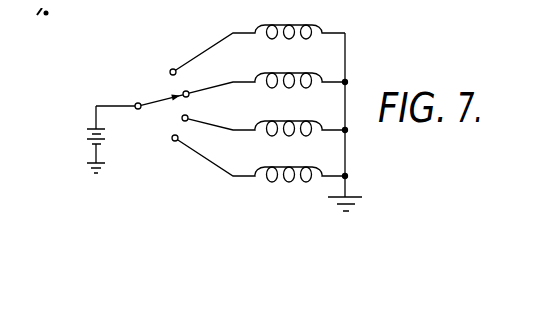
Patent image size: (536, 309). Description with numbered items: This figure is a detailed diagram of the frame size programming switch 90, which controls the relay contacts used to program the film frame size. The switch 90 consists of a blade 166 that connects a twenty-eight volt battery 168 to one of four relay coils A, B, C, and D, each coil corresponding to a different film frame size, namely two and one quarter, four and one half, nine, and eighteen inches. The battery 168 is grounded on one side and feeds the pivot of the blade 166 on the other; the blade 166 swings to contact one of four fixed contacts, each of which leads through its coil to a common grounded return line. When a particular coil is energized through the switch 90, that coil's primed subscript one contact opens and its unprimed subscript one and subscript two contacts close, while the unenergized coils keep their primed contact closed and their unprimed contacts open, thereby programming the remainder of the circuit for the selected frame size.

The frame size programming switch 90 is at (169, 190).
The blade 166 is at (168, 98).
The battery 168 is at (84, 145).